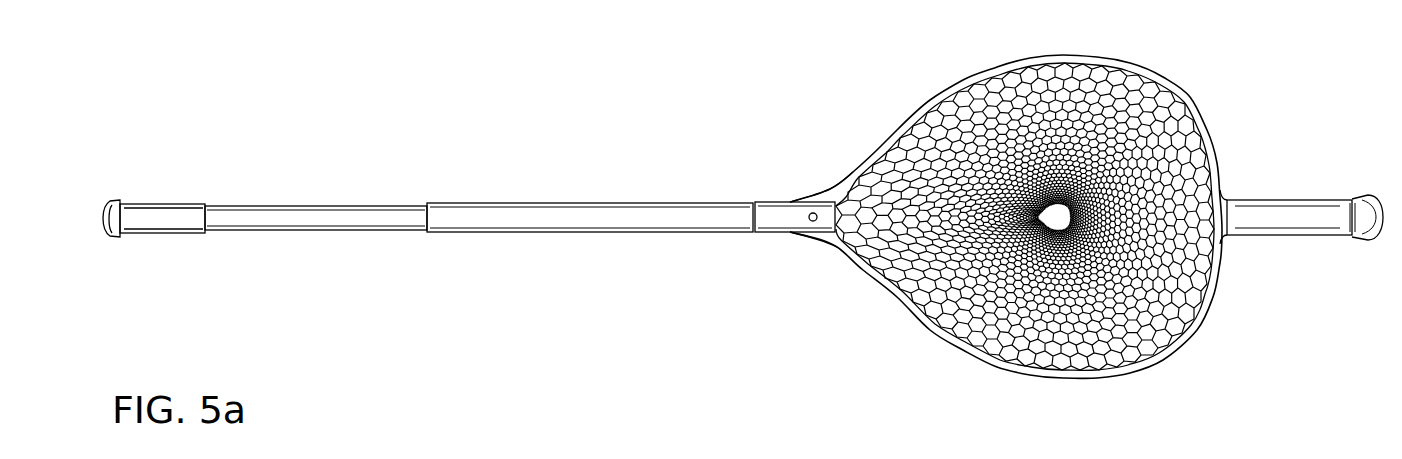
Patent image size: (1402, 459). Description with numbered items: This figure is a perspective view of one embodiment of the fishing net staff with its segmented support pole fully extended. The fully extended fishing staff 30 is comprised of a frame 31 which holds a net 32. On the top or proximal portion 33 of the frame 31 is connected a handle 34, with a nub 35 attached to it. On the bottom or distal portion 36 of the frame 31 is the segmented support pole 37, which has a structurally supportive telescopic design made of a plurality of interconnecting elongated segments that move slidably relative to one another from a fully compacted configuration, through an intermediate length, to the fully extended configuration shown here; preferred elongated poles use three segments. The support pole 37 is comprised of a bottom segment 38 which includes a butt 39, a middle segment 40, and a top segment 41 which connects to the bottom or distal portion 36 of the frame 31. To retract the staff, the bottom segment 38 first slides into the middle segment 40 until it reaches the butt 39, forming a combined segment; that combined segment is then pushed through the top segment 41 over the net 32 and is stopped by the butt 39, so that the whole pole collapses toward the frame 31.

The fishing staff 30 is at (868, 103).
The frame 31 is at (1052, 377).
The net 32 is at (1153, 117).
The top or proximal portion 33 is at (1218, 170).
The handle 34 is at (1297, 227).
The nub 35 is at (1360, 237).
The bottom or distal portion 36 is at (832, 187).
The segmented support pole 37 is at (538, 150).
The bottom segment 38 is at (352, 215).
The butt 39 is at (187, 208).
The middle segment 40 is at (525, 215).
The top segment 41 is at (768, 228).